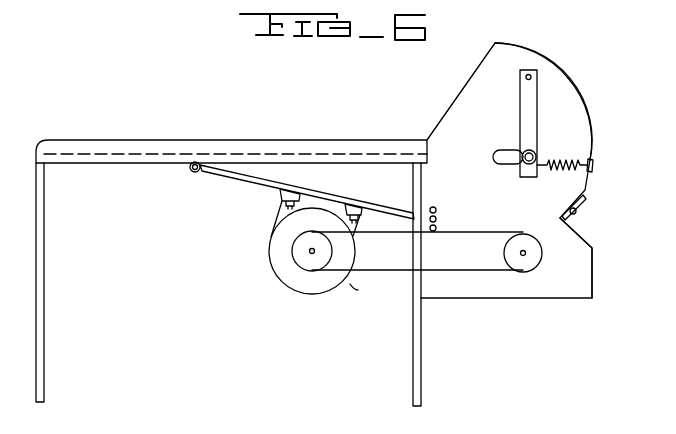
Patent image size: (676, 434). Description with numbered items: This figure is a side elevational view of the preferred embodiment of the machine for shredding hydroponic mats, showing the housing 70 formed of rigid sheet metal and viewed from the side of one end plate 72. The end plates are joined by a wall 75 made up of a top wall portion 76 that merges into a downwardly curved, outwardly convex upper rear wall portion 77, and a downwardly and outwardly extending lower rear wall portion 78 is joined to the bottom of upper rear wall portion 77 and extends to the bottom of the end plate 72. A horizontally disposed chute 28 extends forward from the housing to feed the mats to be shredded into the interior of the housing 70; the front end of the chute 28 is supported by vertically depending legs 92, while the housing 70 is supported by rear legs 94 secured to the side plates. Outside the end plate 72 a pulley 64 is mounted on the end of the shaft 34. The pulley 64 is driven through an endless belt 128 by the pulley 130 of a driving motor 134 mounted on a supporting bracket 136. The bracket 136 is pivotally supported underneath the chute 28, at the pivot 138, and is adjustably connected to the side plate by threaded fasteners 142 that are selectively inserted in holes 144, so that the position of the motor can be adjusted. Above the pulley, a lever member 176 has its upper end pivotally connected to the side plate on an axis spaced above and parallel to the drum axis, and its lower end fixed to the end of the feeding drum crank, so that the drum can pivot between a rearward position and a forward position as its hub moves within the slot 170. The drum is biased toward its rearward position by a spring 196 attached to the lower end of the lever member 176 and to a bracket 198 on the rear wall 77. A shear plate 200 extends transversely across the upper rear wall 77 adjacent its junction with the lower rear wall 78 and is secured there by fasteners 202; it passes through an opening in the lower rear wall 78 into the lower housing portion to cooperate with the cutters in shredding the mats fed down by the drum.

The chute 28 is at (222, 138).
The shaft 34 is at (523, 250).
The pulley 64 is at (542, 259).
The housing 70 is at (604, 81).
The end plate 72 is at (563, 298).
The wall 75 is at (548, 58).
The top wall portion 76 is at (494, 42).
The upper rear wall portion 77 is at (591, 140).
The lower rear wall portion 78 is at (592, 249).
The legs 92 is at (44, 262).
The rear legs 94 is at (421, 360).
The endless belt 128 is at (352, 273).
The pulley 130 is at (297, 263).
The driving motor 134 is at (272, 245).
The supporting bracket 136 is at (251, 184).
The pivot 138 is at (191, 173).
The threaded fasteners 142 is at (437, 219).
The holes 144 is at (435, 207).
The slot 170 is at (492, 155).
The lever member 176 is at (520, 93).
The springs 196 is at (548, 162).
The brackets 198 is at (594, 167).
The shear plate 200 is at (585, 203).
The fasteners 202 is at (577, 214).